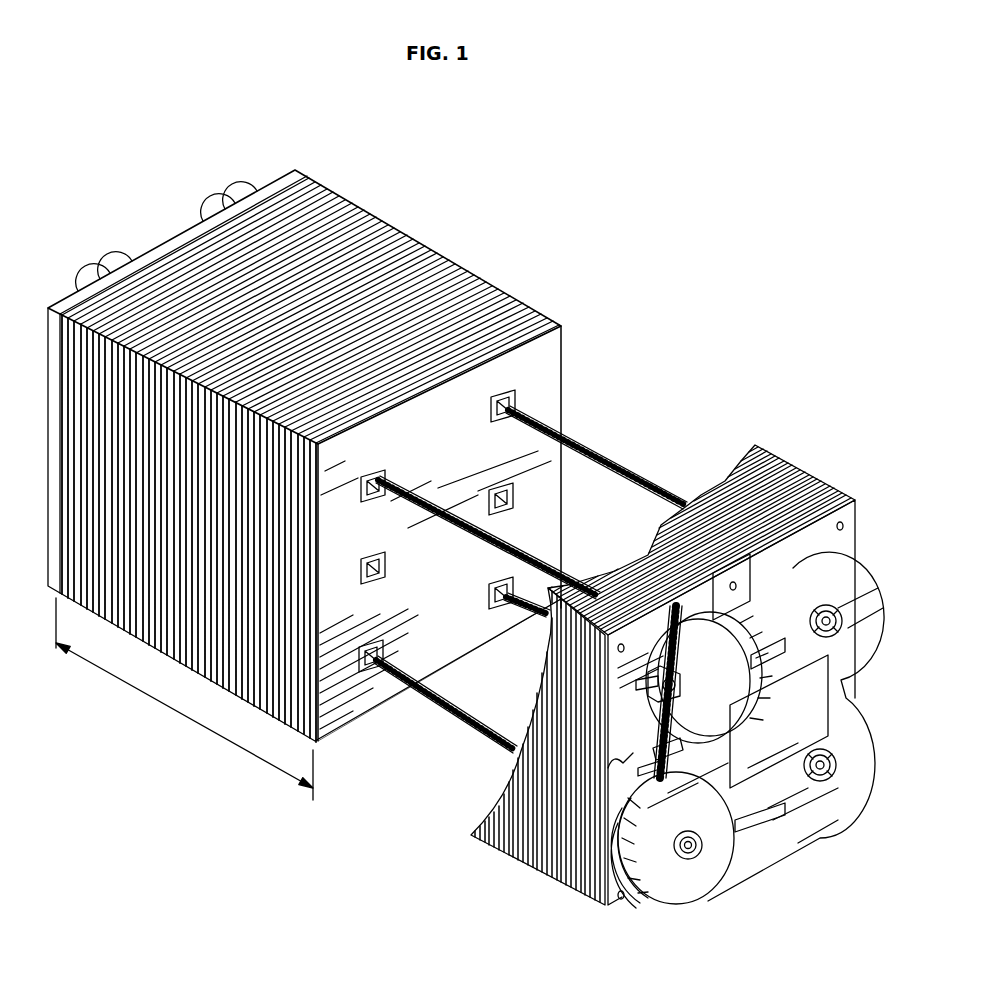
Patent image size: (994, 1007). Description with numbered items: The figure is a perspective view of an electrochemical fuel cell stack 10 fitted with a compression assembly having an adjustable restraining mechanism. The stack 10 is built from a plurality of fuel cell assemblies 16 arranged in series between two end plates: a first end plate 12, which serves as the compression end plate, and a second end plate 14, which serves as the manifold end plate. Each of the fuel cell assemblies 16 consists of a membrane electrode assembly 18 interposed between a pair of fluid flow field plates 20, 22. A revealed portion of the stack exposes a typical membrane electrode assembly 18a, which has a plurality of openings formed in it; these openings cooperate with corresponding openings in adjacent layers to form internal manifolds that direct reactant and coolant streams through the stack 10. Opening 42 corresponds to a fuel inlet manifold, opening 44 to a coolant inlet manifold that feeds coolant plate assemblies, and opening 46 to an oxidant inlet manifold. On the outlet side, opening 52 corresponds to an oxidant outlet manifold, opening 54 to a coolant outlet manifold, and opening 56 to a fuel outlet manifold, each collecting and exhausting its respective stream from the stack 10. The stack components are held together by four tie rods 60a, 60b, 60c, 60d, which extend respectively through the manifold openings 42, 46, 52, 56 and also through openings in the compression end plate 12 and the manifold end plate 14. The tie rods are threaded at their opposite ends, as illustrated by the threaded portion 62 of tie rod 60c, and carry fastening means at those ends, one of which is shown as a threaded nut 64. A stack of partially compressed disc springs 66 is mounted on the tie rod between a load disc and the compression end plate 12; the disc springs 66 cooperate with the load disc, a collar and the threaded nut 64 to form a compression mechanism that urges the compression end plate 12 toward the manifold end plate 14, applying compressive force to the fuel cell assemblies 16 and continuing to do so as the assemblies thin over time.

The electrochemical fuel cell stack 10 is at (695, 366).
The first end plate 12 is at (842, 487).
The second end plate 14 is at (288, 160).
The fuel cell assemblies 16 is at (183, 726).
The membrane electrode assembly 18 is at (822, 482).
The membrane electrode assembly 18a is at (465, 398).
The fluid flow field plate 20 is at (828, 485).
The fluid flow field plate 22 is at (822, 482).
The opening 42 is at (508, 397).
The opening 44 is at (506, 487).
The opening 46 is at (492, 605).
The opening 52 is at (372, 468).
The opening 54 is at (362, 667).
The opening 56 is at (365, 580).
The tie rod 60a is at (607, 447).
The tie rod 60b is at (625, 498).
The tie rod 60c is at (435, 560).
The tie rod 60d is at (460, 722).
The threaded portion 62 is at (695, 680).
The threaded nut 64 is at (725, 690).
The disc springs 66 is at (690, 668).